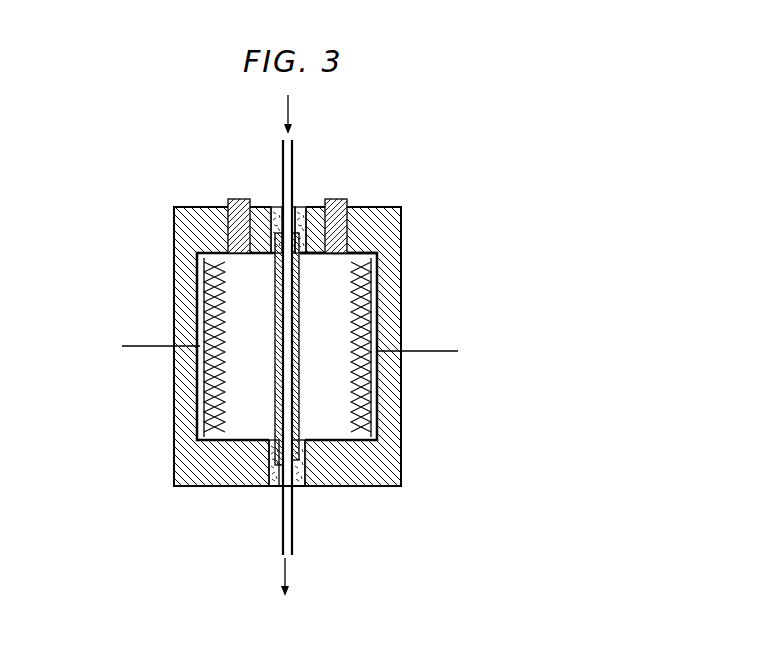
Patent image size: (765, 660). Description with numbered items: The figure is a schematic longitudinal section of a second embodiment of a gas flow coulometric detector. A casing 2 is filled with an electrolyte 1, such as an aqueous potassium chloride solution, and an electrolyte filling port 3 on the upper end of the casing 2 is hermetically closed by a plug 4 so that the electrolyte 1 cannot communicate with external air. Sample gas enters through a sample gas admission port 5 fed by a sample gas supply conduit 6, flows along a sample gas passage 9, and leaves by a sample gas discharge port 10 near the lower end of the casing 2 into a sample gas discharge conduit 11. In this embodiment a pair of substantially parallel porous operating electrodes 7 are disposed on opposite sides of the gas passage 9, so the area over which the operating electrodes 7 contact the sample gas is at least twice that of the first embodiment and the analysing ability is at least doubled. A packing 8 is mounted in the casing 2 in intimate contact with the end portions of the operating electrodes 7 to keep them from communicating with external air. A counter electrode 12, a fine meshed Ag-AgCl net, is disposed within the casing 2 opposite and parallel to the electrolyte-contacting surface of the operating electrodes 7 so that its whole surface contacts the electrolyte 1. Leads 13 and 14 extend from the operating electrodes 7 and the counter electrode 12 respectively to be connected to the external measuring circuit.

The electrolyte 1 is at (233, 272).
The casing 2 is at (383, 232).
The electrolyte filling port 3 is at (330, 258).
The plug 4 is at (342, 223).
The sample gas admission port 5 is at (323, 257).
The sample gas supply conduit 6 is at (288, 144).
The operating electrode 7 is at (277, 208).
The packing 8 is at (302, 250).
The sample gas passage 9 is at (287, 322).
The sample gas discharge port 10 is at (275, 483).
The sample gas discharge conduit 11 is at (288, 494).
The counter electrode 12 is at (205, 275).
The lead 13 is at (298, 212).
The lead 14 is at (145, 345).